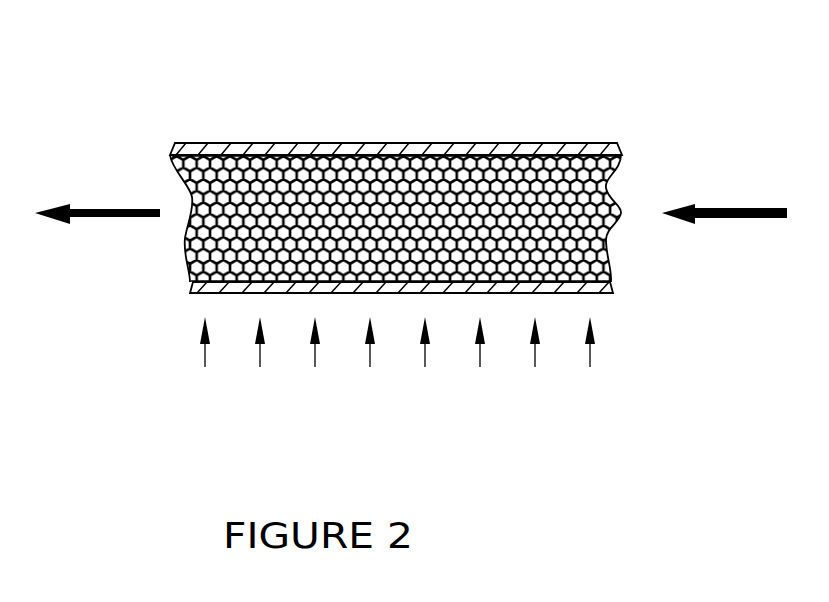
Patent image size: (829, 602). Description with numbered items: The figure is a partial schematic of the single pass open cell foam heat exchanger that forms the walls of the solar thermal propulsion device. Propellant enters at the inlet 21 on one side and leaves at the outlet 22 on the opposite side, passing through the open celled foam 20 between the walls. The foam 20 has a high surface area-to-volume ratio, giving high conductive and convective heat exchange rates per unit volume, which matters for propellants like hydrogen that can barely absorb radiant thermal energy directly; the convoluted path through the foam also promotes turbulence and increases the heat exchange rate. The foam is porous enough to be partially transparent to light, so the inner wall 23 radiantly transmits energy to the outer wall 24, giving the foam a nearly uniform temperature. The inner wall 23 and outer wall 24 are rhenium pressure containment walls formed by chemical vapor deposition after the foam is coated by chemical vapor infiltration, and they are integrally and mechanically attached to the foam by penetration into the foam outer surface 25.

The open celled foam 20 is at (410, 250).
The propellant inlet 21 is at (612, 187).
The propellant outlet 22 is at (183, 200).
The inner wall 23 is at (223, 295).
The outer wall 24 is at (282, 142).
The foam outer surface 25 is at (364, 272).